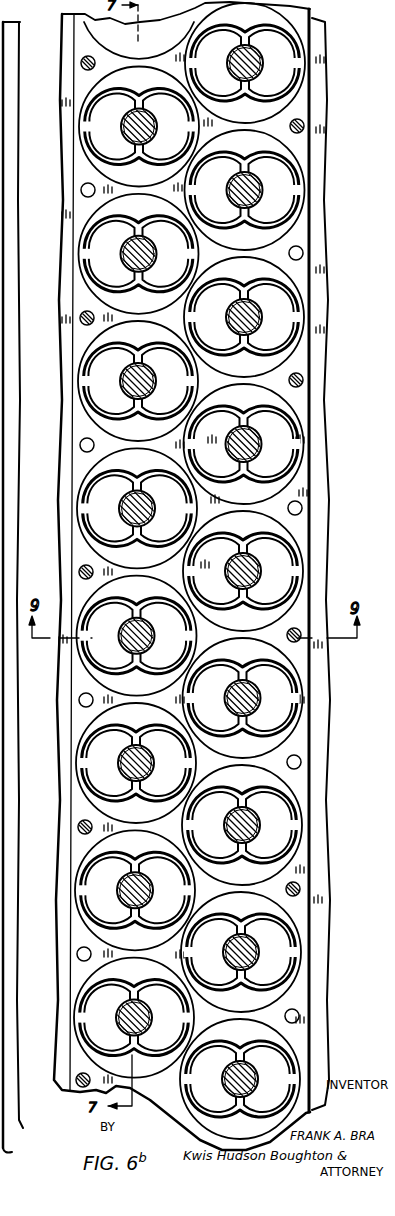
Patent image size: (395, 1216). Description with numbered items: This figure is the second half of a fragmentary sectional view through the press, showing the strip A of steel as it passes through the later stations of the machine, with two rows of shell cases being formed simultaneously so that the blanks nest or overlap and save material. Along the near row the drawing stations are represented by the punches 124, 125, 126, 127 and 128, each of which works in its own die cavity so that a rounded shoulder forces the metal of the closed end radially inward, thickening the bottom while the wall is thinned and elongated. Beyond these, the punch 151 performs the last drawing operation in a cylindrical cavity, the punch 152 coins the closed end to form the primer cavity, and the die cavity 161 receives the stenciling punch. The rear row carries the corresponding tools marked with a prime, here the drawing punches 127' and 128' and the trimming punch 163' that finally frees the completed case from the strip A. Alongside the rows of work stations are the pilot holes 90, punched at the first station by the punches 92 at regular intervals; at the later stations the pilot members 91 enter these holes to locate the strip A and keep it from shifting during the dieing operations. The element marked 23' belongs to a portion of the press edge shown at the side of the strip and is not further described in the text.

The die cavity 161 is at (133, 127).
The punch 152 is at (124, 258).
The punch 151 is at (130, 383).
The punch 128 is at (112, 508).
The punch 127 is at (111, 636).
The punch 126 is at (130, 765).
The punch 125 is at (128, 887).
The punch 124 is at (125, 1018).
The punch 163' is at (285, 63).
The punch 128' is at (277, 571).
The punch 127' is at (280, 698).
The pilot hole 90 is at (83, 190).
The pilot member 91 is at (2, 254).
The punch 92 is at (0, 1140).
The side member 23' is at (12, 574).
The strip A is at (310, 492).